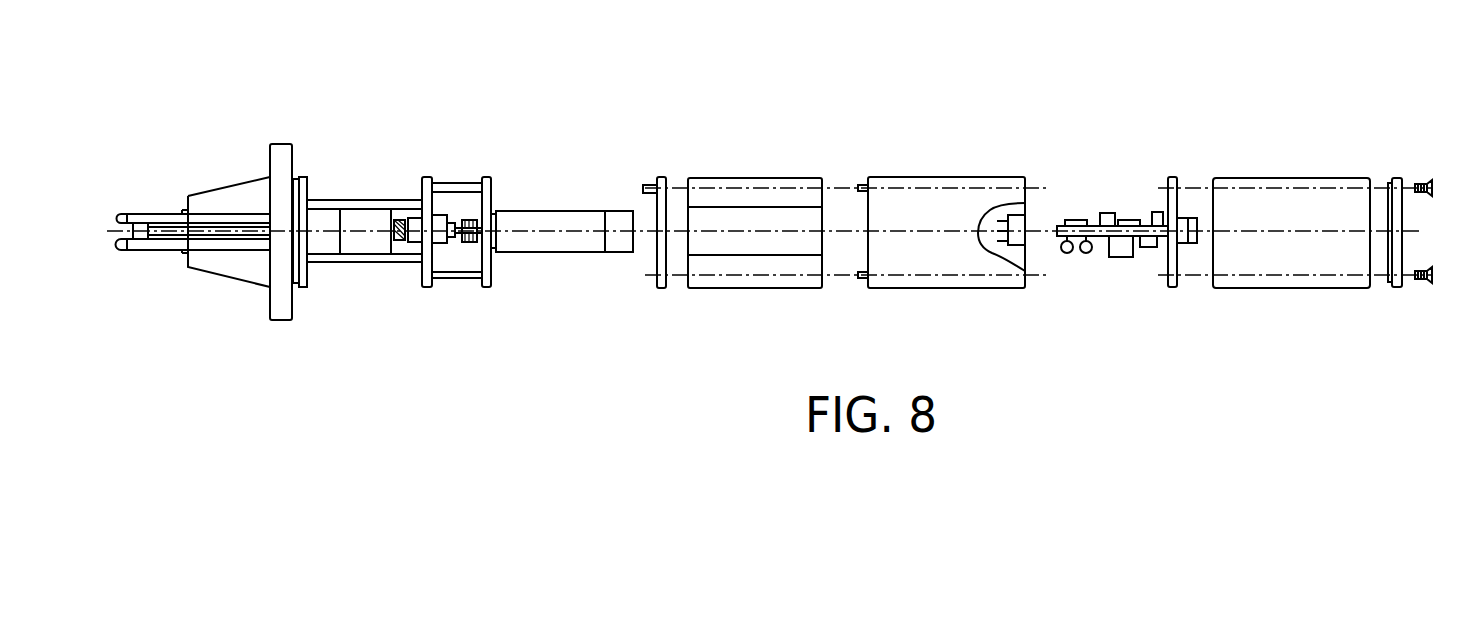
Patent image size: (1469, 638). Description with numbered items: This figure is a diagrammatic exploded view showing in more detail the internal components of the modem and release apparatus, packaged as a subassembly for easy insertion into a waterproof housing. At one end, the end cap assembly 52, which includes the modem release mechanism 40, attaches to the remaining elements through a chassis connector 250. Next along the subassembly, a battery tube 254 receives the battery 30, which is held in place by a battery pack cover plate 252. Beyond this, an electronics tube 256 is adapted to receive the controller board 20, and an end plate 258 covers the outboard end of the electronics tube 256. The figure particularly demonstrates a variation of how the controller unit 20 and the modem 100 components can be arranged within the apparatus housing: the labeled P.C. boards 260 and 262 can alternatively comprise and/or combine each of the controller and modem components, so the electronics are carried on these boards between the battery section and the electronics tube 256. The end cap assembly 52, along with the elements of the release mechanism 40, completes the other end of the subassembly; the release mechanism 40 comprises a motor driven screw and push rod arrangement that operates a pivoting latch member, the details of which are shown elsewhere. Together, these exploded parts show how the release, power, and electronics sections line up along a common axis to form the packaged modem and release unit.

The controller board 20 is at (1077, 140).
The battery 30 is at (747, 178).
The modem release mechanism 40 is at (327, 200).
The end cap assembly 52 is at (139, 214).
The modem 100 is at (1172, 177).
The chassis connector 250 is at (540, 211).
The battery pack cover plate 252 is at (660, 177).
The battery tube 254 is at (919, 177).
The electronics tube 256 is at (1277, 178).
The end plate 258 is at (1397, 178).
The P.C. board 260 is at (1103, 183).
The P.C. board 262 is at (1114, 290).